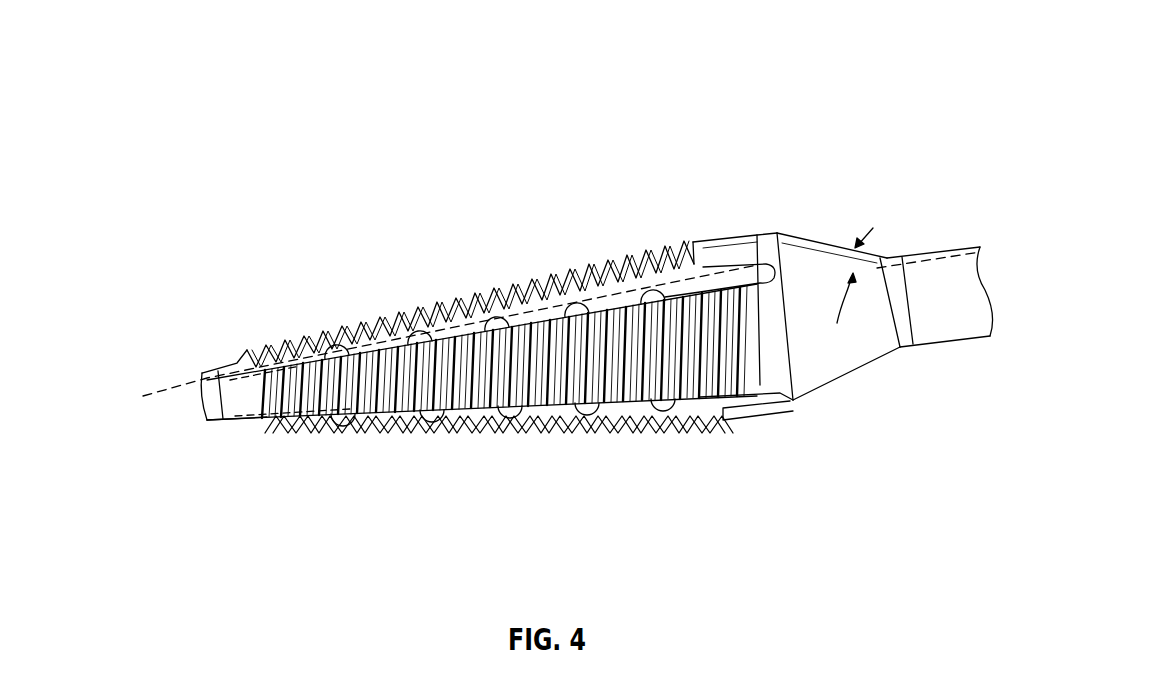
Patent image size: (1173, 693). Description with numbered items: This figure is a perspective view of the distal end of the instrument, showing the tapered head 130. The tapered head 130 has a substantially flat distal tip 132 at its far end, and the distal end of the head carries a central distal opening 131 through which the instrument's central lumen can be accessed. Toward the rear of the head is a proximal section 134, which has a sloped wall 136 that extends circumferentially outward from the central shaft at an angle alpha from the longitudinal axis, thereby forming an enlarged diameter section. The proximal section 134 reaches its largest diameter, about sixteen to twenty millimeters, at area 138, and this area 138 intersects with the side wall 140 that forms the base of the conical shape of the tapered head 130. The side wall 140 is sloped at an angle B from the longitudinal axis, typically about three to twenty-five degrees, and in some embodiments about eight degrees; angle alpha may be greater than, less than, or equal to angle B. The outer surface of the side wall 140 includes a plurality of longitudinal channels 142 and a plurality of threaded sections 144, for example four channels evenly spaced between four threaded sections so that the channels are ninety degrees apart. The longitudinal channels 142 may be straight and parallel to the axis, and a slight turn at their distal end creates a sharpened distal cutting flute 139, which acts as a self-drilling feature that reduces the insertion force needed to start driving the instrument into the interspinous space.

The tapered head 130 is at (627, 124).
The central distal opening 131 is at (181, 398).
The distal tip 132 is at (191, 421).
The proximal section 134 is at (901, 411).
The sloped wall 136 is at (826, 243).
The area 138 is at (768, 233).
The distal cutting flute 139 is at (246, 350).
The side wall 140 is at (413, 310).
The longitudinal channels 142 is at (705, 280).
The threaded sections 144 is at (480, 395).
The angle B is at (178, 375).